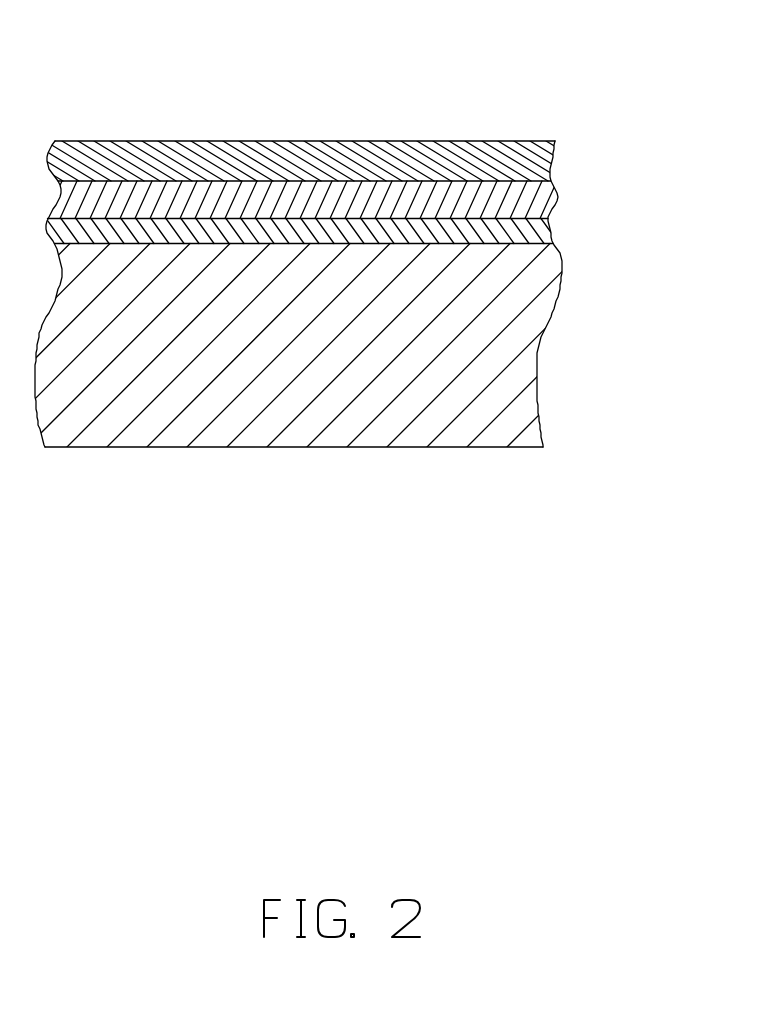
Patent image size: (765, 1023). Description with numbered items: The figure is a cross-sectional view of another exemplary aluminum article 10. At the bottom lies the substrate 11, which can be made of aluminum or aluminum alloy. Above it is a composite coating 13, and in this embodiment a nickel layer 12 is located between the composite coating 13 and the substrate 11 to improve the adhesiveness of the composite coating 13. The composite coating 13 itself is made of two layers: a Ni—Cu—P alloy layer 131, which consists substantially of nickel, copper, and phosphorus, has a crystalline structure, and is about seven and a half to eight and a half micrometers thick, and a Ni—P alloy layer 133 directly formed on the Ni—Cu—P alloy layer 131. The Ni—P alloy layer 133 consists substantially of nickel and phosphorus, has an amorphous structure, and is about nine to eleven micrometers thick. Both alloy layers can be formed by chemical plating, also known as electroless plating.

The aluminum article 10 is at (225, 65).
The substrate 11 is at (515, 377).
The nickel layer 12 is at (533, 237).
The composite coating 13 is at (350, 151).
The Ni—Cu—P alloy layer 131 is at (345, 200).
The Ni—P alloy layer 133 is at (525, 148).